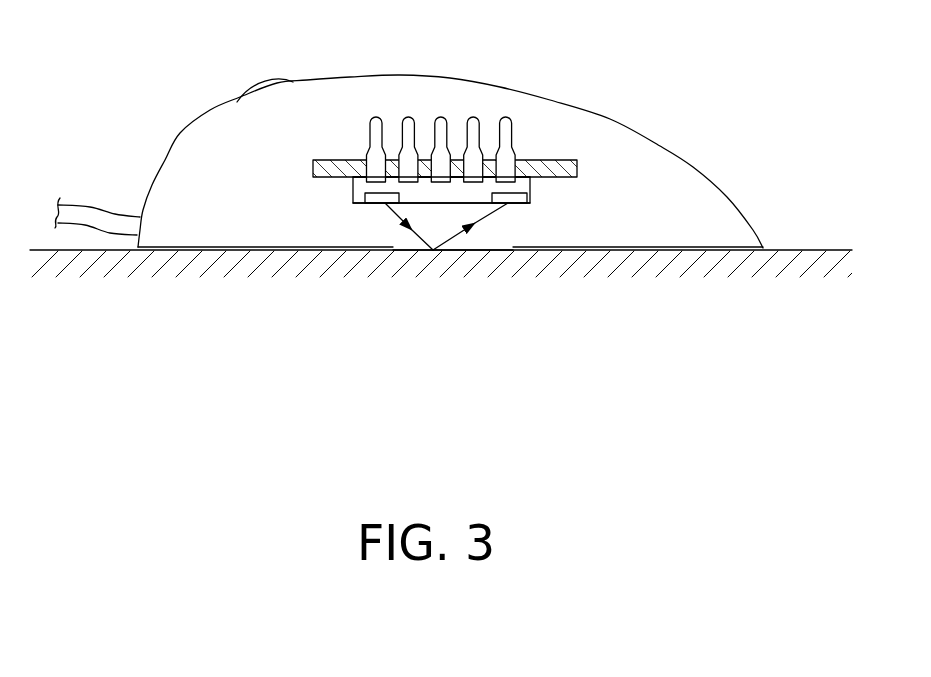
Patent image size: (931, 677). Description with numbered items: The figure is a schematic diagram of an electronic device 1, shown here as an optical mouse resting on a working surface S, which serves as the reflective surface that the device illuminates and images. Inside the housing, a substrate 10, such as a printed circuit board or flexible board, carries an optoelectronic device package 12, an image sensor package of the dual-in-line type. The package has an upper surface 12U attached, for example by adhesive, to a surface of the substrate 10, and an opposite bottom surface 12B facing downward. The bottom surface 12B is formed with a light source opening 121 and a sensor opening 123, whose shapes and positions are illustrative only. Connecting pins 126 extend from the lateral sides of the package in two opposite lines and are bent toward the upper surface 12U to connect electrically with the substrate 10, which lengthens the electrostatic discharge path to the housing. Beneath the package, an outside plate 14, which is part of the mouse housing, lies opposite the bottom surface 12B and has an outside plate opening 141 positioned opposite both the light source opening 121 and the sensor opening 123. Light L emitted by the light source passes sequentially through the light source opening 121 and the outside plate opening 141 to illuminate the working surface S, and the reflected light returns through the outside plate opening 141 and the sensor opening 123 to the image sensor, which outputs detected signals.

The electronic device 1 is at (163, 67).
The substrate 10 is at (570, 160).
The optoelectronic device package 12 is at (532, 190).
The upper surface 12U is at (360, 176).
The bottom surface 12B is at (359, 204).
The light source opening 121 is at (373, 200).
The sensor opening 123 is at (513, 200).
The connecting pins 126 is at (506, 122).
The outside plate 14 is at (210, 248).
The outside plate opening 141 is at (502, 247).
The working surface S is at (778, 248).
The light L is at (446, 227).